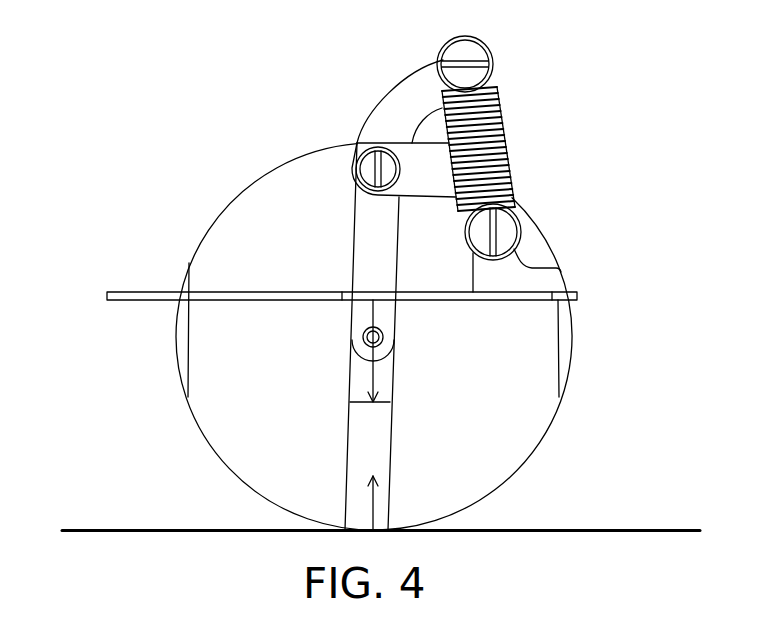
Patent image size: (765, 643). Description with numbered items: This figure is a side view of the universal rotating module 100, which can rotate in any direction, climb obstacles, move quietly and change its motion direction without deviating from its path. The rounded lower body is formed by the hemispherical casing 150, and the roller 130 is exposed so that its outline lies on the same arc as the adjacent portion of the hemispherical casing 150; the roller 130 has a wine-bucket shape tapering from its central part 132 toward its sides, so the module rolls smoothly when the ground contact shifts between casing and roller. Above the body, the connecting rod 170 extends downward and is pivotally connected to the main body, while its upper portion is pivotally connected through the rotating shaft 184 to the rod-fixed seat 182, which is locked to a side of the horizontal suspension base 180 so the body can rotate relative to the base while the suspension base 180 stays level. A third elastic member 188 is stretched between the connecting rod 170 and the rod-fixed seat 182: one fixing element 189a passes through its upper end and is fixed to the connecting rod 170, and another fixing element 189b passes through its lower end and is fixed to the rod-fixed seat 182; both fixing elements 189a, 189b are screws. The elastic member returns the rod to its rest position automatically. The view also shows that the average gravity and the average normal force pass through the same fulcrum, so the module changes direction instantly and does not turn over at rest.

The universal rotating module 100 is at (172, 68).
The roller 130 is at (376, 330).
The central part 132 is at (185, 343).
The hemispherical casing 150 is at (202, 420).
The connecting rod 170 is at (402, 108).
The suspension base 180 is at (137, 292).
The rod-fixed seat 182 is at (538, 283).
The rotating shaft 184 is at (368, 169).
The third elastic member 188 is at (507, 148).
The fixing element 189a is at (473, 57).
The fixing element 189b is at (521, 232).